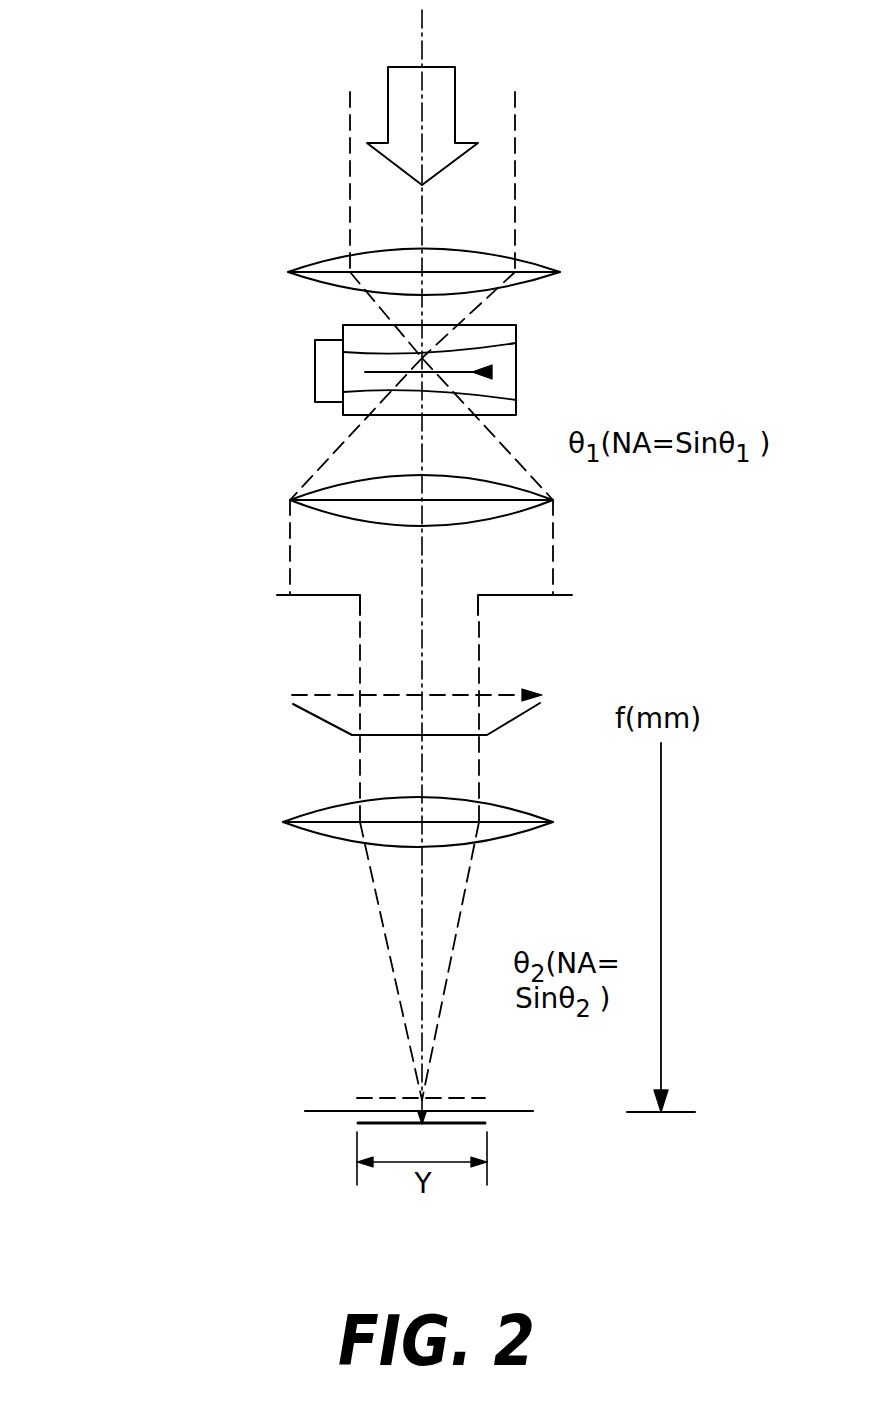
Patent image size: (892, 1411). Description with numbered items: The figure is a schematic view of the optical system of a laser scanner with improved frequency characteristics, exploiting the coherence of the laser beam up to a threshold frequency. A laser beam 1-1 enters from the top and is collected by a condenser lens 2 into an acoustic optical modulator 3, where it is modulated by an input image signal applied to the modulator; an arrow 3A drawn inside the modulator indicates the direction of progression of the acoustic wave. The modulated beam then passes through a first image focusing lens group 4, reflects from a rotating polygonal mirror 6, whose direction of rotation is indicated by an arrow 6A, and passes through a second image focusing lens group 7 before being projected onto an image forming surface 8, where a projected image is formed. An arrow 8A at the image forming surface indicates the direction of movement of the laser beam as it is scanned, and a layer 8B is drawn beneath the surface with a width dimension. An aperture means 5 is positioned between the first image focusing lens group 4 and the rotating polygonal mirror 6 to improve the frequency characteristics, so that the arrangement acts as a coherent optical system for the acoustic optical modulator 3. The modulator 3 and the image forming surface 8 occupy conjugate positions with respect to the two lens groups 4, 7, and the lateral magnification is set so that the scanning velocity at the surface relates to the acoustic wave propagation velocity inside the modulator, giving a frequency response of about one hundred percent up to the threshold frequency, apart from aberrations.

The laser beam 1-1 is at (388, 72).
The condenser lens 2 is at (317, 262).
The acoustic optical modulator 3 is at (315, 387).
The arrow indicating direction of acoustic wave progression 3A is at (490, 372).
The first image focusing lens group 4 is at (302, 496).
The aperture means 5 is at (332, 595).
The rotating polygonal mirror 6 is at (318, 722).
The arrow indicating direction of rotation of the polygonal mirror 6A is at (510, 695).
The second image focusing lens group 7 is at (320, 810).
The image forming surface 8 is at (318, 1110).
The arrow indicating direction of movement of the laser beam 8A is at (478, 1098).
The recording layer 8B is at (358, 1124).